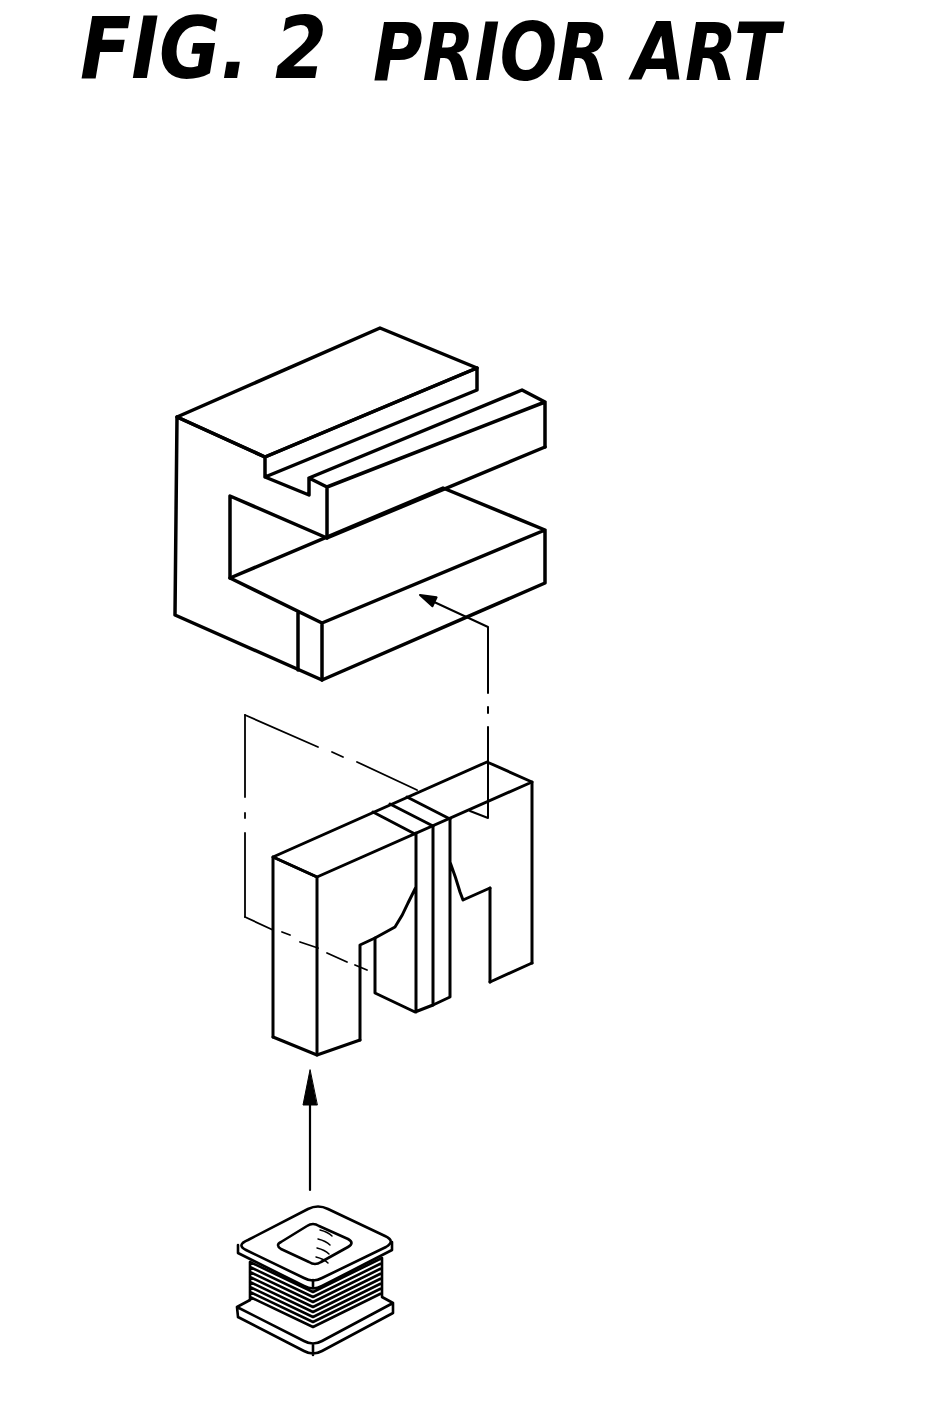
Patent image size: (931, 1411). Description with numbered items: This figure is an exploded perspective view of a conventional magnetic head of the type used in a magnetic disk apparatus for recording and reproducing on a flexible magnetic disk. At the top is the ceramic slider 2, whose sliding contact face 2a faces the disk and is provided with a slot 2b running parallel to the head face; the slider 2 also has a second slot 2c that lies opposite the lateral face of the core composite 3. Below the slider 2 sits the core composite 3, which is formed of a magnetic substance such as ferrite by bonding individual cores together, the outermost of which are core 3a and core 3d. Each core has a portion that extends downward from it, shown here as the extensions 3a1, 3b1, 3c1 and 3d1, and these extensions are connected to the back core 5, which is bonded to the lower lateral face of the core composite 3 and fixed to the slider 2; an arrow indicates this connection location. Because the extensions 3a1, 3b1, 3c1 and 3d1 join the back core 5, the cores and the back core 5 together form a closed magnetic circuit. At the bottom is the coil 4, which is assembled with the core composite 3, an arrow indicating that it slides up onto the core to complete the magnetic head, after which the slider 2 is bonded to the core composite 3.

The ceramic slider 2 is at (354, 467).
The sliding contact face 2a is at (410, 350).
The slot 2b is at (483, 400).
The slot 2c is at (280, 578).
The core composite 3 is at (421, 943).
The core 3a is at (300, 1014).
The extension 3a1 is at (340, 1032).
The extension 3b1 is at (403, 990).
The extension 3c1 is at (443, 988).
The core 3d is at (615, 876).
The extension 3d1 is at (520, 948).
The coil 4 is at (393, 1280).
The back core 5 is at (535, 610).